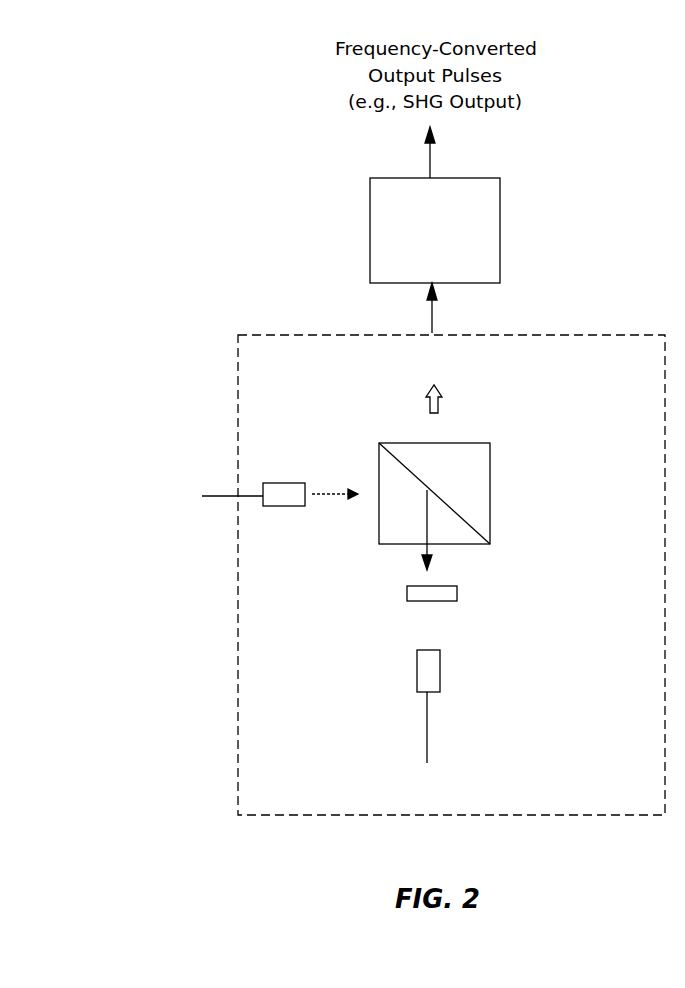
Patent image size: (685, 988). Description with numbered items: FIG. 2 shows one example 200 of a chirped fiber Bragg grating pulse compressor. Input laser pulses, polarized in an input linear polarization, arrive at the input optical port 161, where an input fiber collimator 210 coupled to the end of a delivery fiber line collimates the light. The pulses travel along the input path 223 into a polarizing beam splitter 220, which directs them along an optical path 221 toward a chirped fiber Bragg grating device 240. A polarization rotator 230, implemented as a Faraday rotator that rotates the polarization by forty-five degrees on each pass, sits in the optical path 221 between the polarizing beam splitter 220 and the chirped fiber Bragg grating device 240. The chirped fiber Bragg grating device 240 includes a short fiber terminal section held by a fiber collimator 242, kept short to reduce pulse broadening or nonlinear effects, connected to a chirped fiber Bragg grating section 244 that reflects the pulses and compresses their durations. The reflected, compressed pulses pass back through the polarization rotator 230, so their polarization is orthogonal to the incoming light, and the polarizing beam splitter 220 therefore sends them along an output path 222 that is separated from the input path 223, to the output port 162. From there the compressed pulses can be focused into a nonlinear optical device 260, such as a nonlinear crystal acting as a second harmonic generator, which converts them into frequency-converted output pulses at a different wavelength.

The CFBG compressor example 200 is at (168, 340).
The input optical port 161 is at (238, 490).
The output port 162 is at (430, 333).
The input fiber collimator 210 is at (273, 505).
The polarizing beam splitter 220 is at (402, 443).
The optical path 221 is at (427, 553).
The output path 222 is at (440, 401).
The input path 223 is at (324, 488).
The polarization rotator 230 is at (407, 590).
The chirped fiber Bragg grating device 240 is at (495, 706).
The fiber collimator 242 is at (417, 667).
The chirped fiber Bragg grating section 244 is at (427, 734).
The nonlinear optical device 260 is at (500, 230).